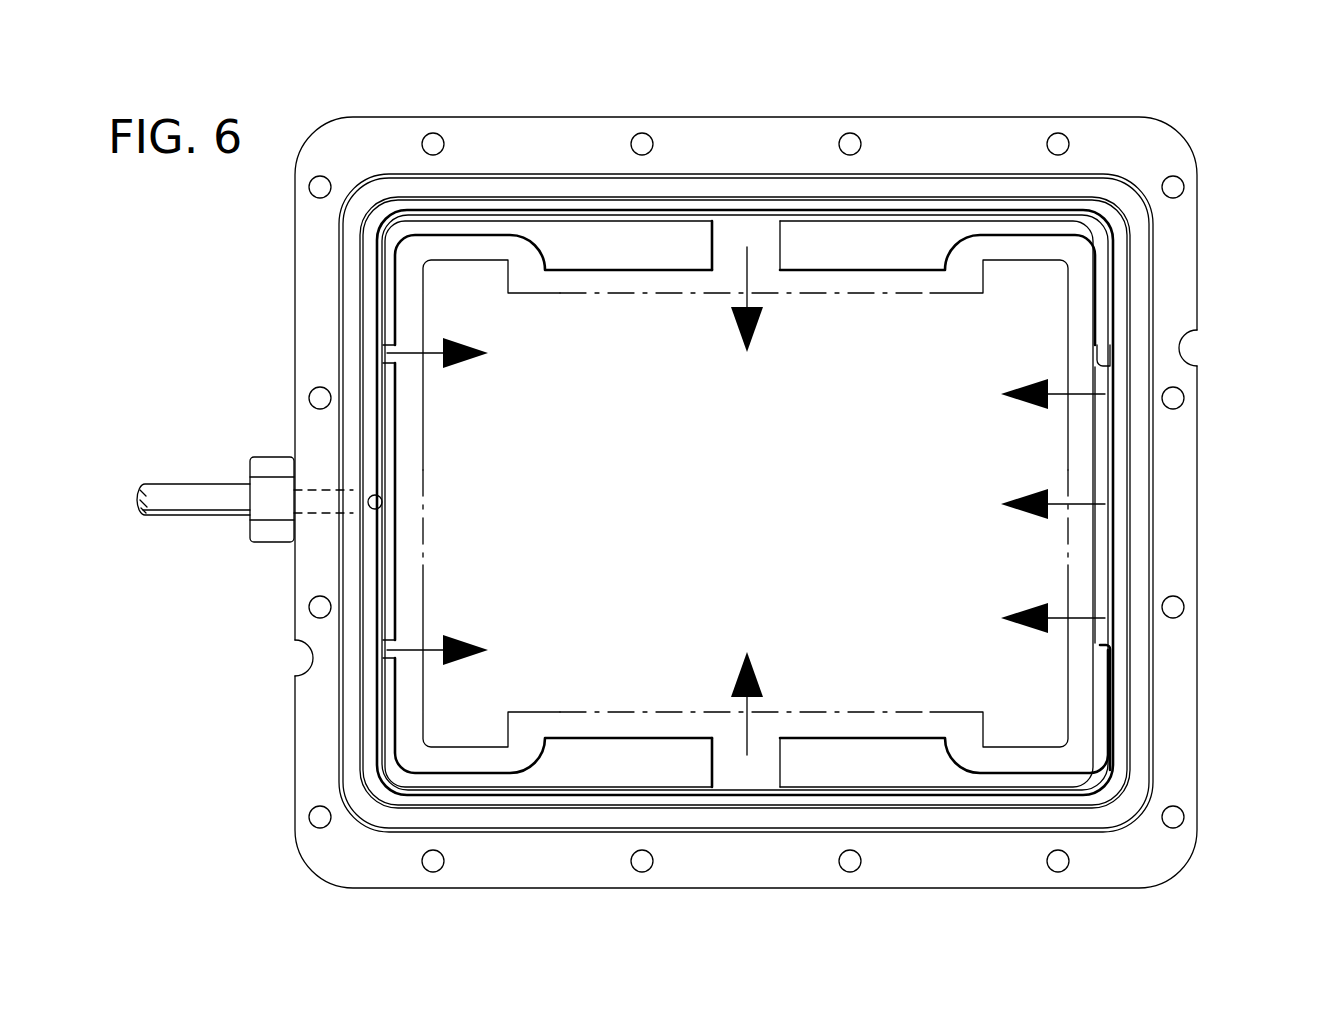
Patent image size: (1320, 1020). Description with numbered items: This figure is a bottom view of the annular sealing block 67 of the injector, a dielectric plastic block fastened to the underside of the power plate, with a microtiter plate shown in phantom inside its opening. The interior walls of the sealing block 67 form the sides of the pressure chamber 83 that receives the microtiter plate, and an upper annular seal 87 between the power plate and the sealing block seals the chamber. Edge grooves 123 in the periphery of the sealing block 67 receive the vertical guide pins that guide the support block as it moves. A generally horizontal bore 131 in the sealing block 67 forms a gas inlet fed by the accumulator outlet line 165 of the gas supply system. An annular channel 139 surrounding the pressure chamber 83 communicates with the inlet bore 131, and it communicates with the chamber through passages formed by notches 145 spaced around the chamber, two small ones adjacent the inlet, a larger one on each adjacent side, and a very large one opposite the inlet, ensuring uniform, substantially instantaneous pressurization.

The sealing block 67 is at (1197, 503).
The pressure chamber 83 is at (740, 502).
The upper annular seal 87 is at (1138, 723).
The edge grooves 123 is at (1200, 343).
The bore 131 is at (305, 522).
The annular channel 139 is at (690, 218).
The notches 145 is at (395, 353).
The accumulator outlet line 165 is at (185, 483).